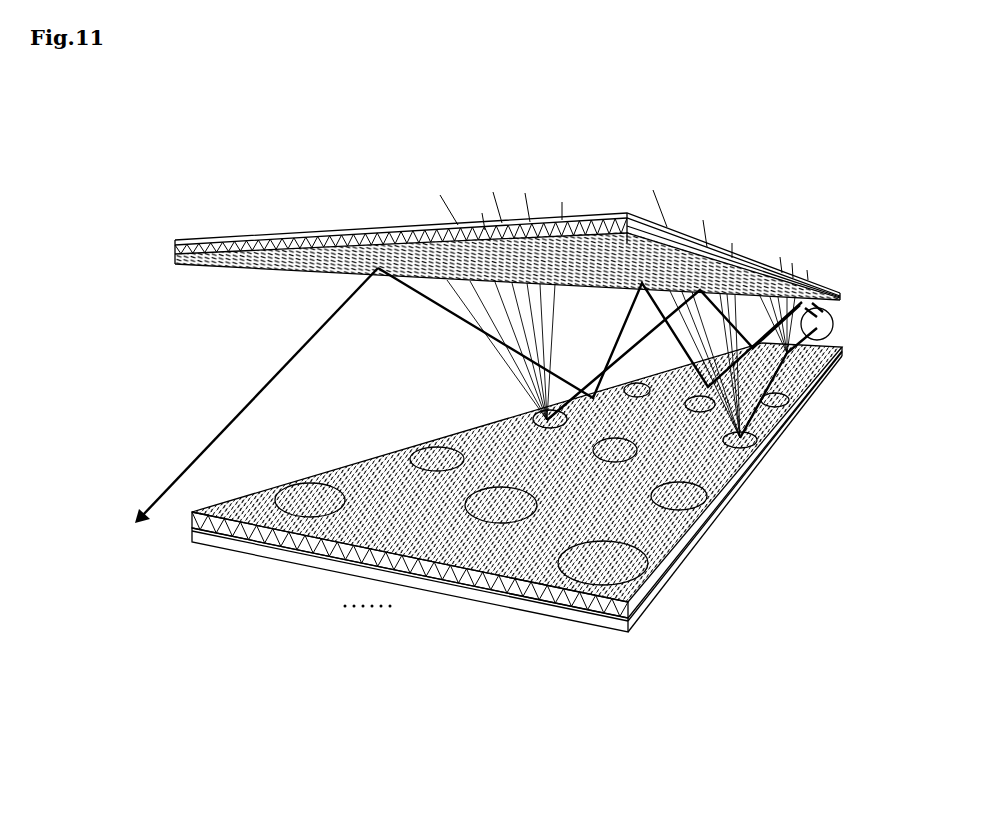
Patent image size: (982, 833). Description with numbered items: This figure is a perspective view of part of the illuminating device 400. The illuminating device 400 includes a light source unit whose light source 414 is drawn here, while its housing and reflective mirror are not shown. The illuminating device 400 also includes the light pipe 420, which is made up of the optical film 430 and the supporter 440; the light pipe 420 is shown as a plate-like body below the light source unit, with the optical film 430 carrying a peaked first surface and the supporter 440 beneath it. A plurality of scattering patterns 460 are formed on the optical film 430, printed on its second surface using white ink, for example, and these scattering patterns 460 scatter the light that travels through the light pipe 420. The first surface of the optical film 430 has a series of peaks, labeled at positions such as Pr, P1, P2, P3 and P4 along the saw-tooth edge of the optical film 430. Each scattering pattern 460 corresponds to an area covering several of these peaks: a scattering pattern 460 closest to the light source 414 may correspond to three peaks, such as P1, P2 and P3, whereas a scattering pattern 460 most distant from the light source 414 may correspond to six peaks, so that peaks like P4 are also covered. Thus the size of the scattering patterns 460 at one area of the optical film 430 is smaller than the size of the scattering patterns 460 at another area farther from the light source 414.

The illuminating device 400 is at (832, 176).
The light source 414 is at (834, 322).
The light pipe 420 is at (120, 595).
The optical film 430 is at (192, 528).
The supporter 440 is at (193, 537).
The scattering patterns 460 is at (623, 567).
The reference position Pr is at (203, 530).
The first peak P1 is at (610, 628).
The second peak P2 is at (597, 625).
The third peak P3 is at (582, 620).
The fourth peak P4 is at (565, 617).